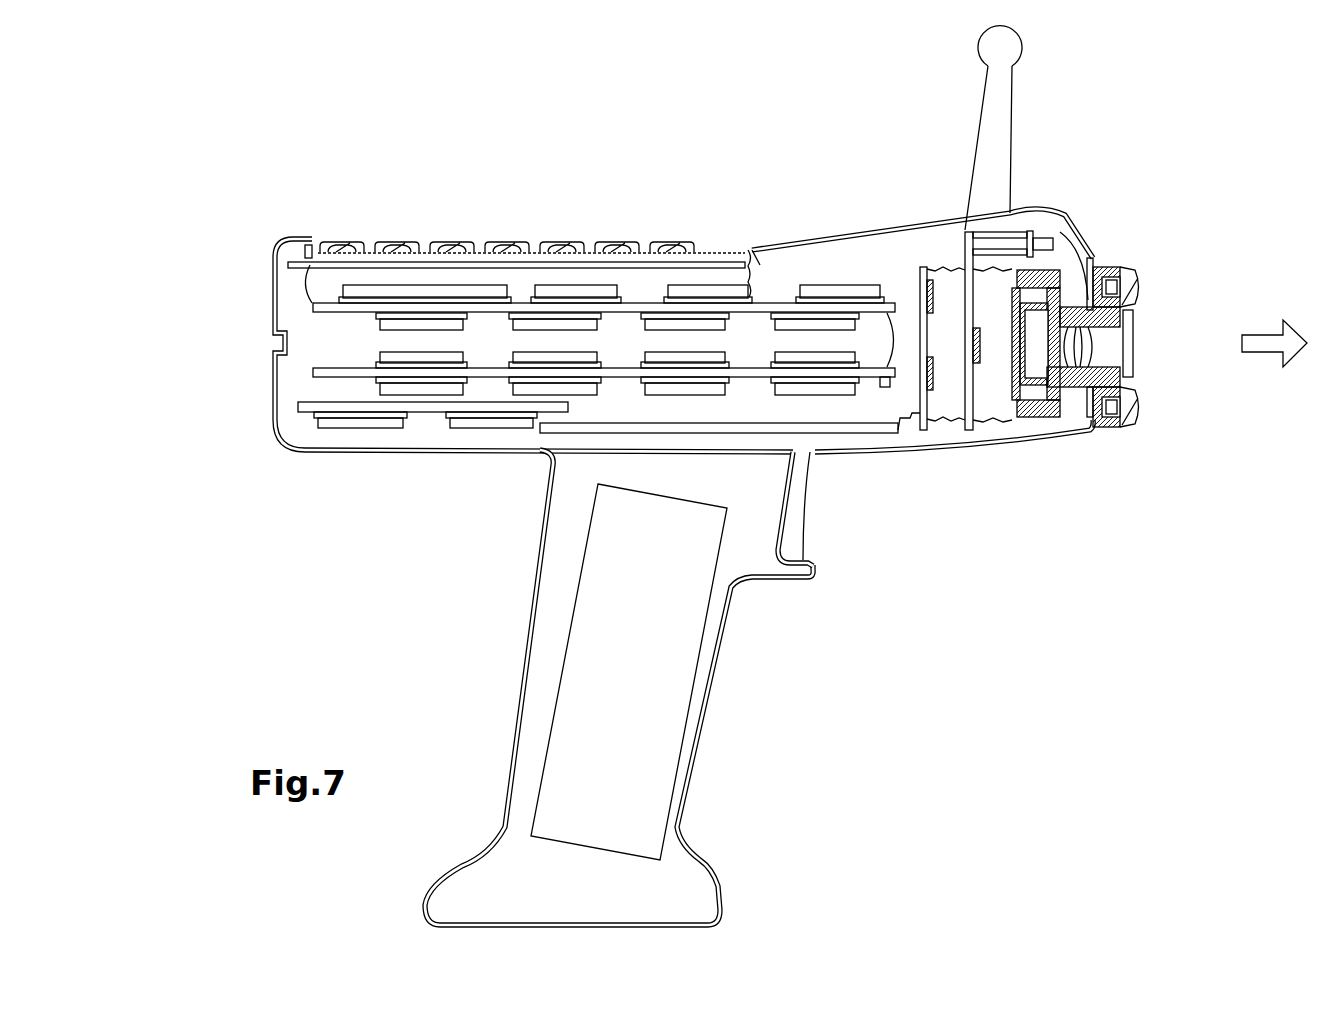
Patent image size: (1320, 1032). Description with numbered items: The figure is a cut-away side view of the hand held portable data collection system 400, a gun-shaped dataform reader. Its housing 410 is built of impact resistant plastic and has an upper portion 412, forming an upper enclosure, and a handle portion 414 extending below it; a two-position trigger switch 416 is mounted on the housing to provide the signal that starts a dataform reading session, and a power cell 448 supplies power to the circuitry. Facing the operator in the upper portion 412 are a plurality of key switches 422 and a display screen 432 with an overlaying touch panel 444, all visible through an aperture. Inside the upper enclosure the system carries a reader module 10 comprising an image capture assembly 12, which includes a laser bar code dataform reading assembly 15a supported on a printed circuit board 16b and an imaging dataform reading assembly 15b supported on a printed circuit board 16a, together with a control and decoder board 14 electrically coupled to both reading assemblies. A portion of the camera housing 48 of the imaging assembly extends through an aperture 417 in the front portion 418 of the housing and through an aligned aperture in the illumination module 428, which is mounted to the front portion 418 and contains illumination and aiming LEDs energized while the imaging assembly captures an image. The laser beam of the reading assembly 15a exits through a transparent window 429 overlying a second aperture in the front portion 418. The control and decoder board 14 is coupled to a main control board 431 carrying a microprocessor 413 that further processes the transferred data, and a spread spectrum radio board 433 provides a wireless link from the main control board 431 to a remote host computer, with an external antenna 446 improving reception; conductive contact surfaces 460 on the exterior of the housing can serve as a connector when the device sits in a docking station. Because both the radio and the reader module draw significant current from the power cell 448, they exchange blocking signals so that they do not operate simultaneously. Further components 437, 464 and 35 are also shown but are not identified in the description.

The portable data collection system 400 is at (738, 475).
The housing 410 is at (631, 545).
The upper portion 412 is at (258, 380).
The microprocessor 413 is at (516, 235).
The key switches 422 is at (507, 244).
The display screen 432 is at (808, 242).
The touch panel 444 is at (866, 232).
The external antenna 446 is at (1013, 82).
The laser bar code dataform reading assembly 15a is at (1020, 222).
The aperture 417 is at (1068, 232).
The image capture assembly 12 is at (1090, 275).
The reader module 10 is at (1090, 275).
The window 429 is at (1080, 242).
The illumination module 428 is at (1140, 284).
The imaging dataform reading assembly 15b is at (1160, 310).
The camera housing 48 is at (1130, 362).
The front portion 418 is at (1080, 410).
The bracket 464 is at (1045, 415).
The printed circuit board 16a is at (990, 430).
The printed circuit board 16b is at (965, 430).
The control and decoder board 14 is at (850, 428).
The lower circuit board 437 is at (755, 370).
The trigger switch 416 is at (797, 537).
The handle portion 414 is at (480, 754).
The power cell 448 is at (646, 734).
The housing bottom wall 35 is at (297, 407).
The conductive contact surfaces 460 is at (276, 305).
The main control board 431 is at (337, 312).
The spread spectrum radio board 433 is at (313, 372).